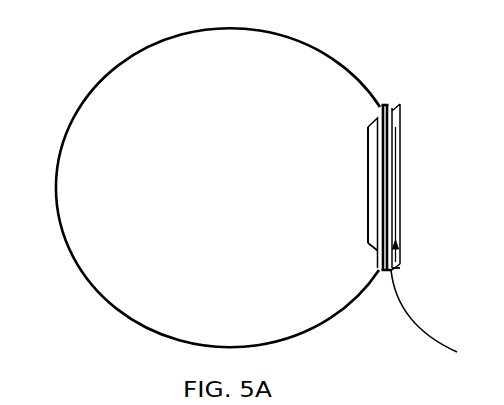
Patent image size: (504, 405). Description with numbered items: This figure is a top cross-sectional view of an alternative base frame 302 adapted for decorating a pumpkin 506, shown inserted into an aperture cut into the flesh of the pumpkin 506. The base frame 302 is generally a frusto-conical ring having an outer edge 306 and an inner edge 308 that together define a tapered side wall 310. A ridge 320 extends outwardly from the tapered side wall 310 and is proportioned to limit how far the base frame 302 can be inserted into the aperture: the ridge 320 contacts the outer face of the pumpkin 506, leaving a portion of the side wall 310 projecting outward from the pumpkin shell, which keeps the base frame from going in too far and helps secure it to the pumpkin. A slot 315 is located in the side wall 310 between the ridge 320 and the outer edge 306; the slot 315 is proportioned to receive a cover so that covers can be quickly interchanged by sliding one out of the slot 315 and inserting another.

The pumpkin 506 is at (95, 69).
The base frame 302 is at (385, 190).
The ridge 320 is at (385, 103).
The inner edge 308 is at (328, 199).
The tapered side wall 310 is at (370, 253).
The outer edge 306 is at (402, 155).
The slot 315 is at (396, 184).